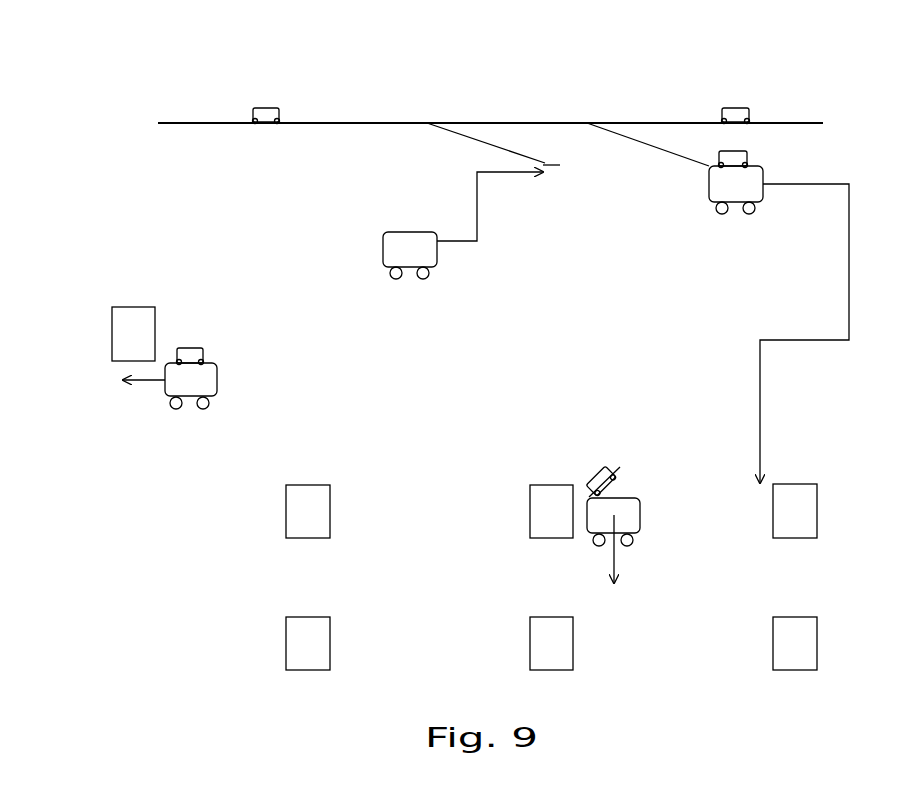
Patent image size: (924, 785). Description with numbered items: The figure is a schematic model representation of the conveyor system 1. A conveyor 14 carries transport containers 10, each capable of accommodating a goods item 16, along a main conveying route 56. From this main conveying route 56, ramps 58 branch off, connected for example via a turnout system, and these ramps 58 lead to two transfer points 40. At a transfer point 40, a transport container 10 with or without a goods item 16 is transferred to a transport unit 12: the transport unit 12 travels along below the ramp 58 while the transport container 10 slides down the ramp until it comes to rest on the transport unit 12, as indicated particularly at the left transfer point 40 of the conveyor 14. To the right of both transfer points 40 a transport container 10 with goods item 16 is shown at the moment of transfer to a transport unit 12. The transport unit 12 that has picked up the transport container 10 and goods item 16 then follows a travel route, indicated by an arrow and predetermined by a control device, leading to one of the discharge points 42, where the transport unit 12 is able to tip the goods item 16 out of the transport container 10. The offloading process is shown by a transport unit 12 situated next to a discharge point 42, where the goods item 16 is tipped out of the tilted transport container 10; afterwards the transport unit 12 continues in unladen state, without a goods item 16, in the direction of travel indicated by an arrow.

The conveyor system 1 is at (862, 100).
The transport container 10 is at (250, 108).
The transport unit 12 is at (392, 247).
The conveyor 14 is at (463, 118).
The goods item 16 is at (266, 112).
The transfer point 40 is at (553, 160).
The discharge point 42 is at (121, 330).
The main conveying route 56 is at (178, 132).
The ramp 58 is at (608, 138).